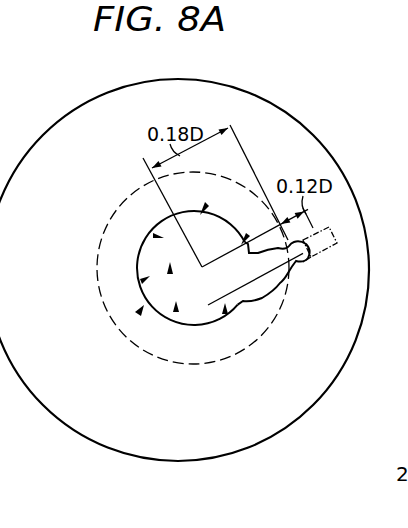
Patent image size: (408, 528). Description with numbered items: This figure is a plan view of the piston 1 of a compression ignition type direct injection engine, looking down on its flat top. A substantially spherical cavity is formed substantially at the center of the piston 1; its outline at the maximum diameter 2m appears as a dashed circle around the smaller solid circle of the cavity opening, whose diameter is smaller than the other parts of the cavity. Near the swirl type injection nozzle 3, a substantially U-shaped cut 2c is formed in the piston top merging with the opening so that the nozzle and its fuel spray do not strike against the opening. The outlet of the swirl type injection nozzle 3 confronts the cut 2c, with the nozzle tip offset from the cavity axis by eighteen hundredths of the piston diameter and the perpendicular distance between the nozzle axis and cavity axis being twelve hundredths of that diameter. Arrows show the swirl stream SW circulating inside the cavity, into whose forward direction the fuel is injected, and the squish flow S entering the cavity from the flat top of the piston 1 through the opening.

The piston 1 is at (297, 139).
The maximum diameter 2m is at (175, 366).
The cut 2c is at (278, 286).
The swirl type injection nozzle 3 is at (319, 262).
The squish flow S is at (245, 236).
The swirl stream SW is at (170, 270).